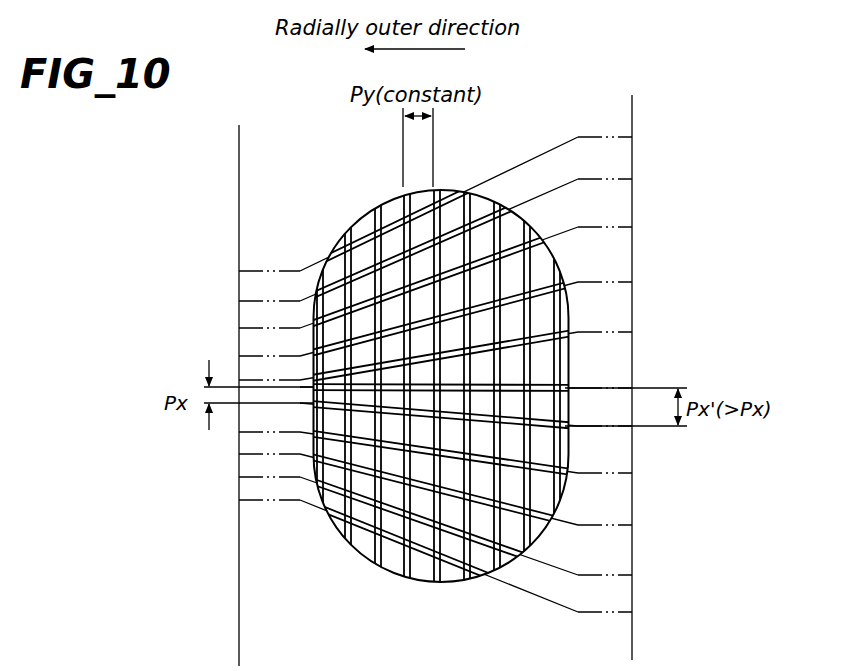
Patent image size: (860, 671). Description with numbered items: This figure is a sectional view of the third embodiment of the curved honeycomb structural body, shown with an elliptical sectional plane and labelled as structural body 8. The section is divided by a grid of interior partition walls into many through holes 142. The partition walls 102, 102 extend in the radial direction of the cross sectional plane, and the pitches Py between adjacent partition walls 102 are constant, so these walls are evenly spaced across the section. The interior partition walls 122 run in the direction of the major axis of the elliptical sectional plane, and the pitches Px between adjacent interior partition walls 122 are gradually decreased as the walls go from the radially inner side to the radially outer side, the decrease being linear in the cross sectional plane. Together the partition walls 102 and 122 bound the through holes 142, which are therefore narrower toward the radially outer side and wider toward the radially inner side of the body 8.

The tire 8 is at (349, 550).
The partition wall 102 is at (470, 395).
The interior partition wall 122 is at (541, 372).
The through hole 142 is at (353, 247).